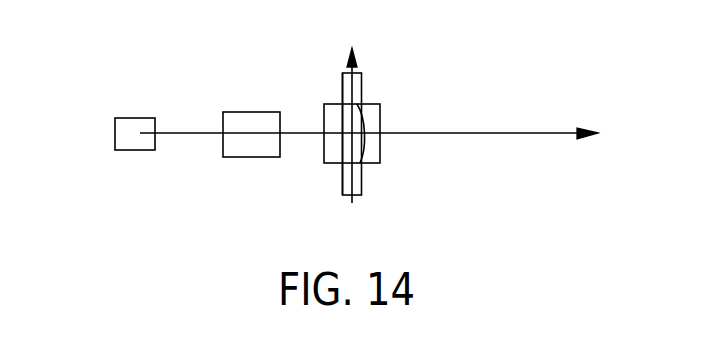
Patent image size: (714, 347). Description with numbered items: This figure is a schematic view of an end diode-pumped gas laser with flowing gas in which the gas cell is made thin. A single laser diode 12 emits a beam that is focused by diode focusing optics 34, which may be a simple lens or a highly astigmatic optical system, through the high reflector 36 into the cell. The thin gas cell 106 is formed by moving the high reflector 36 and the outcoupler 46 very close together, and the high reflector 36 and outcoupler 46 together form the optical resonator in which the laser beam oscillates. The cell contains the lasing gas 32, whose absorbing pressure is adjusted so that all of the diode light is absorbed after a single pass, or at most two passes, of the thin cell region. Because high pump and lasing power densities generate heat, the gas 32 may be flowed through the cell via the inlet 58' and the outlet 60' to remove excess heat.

The laser diode 12 is at (116, 122).
The diode focusing optics 34 is at (224, 118).
The high reflector 36 is at (325, 106).
The lasing gas 32 is at (342, 147).
The outcoupler 46 is at (380, 165).
The thin gas cell 106 is at (357, 106).
The inlet 58' is at (384, 154).
The outlet 60' is at (376, 42).